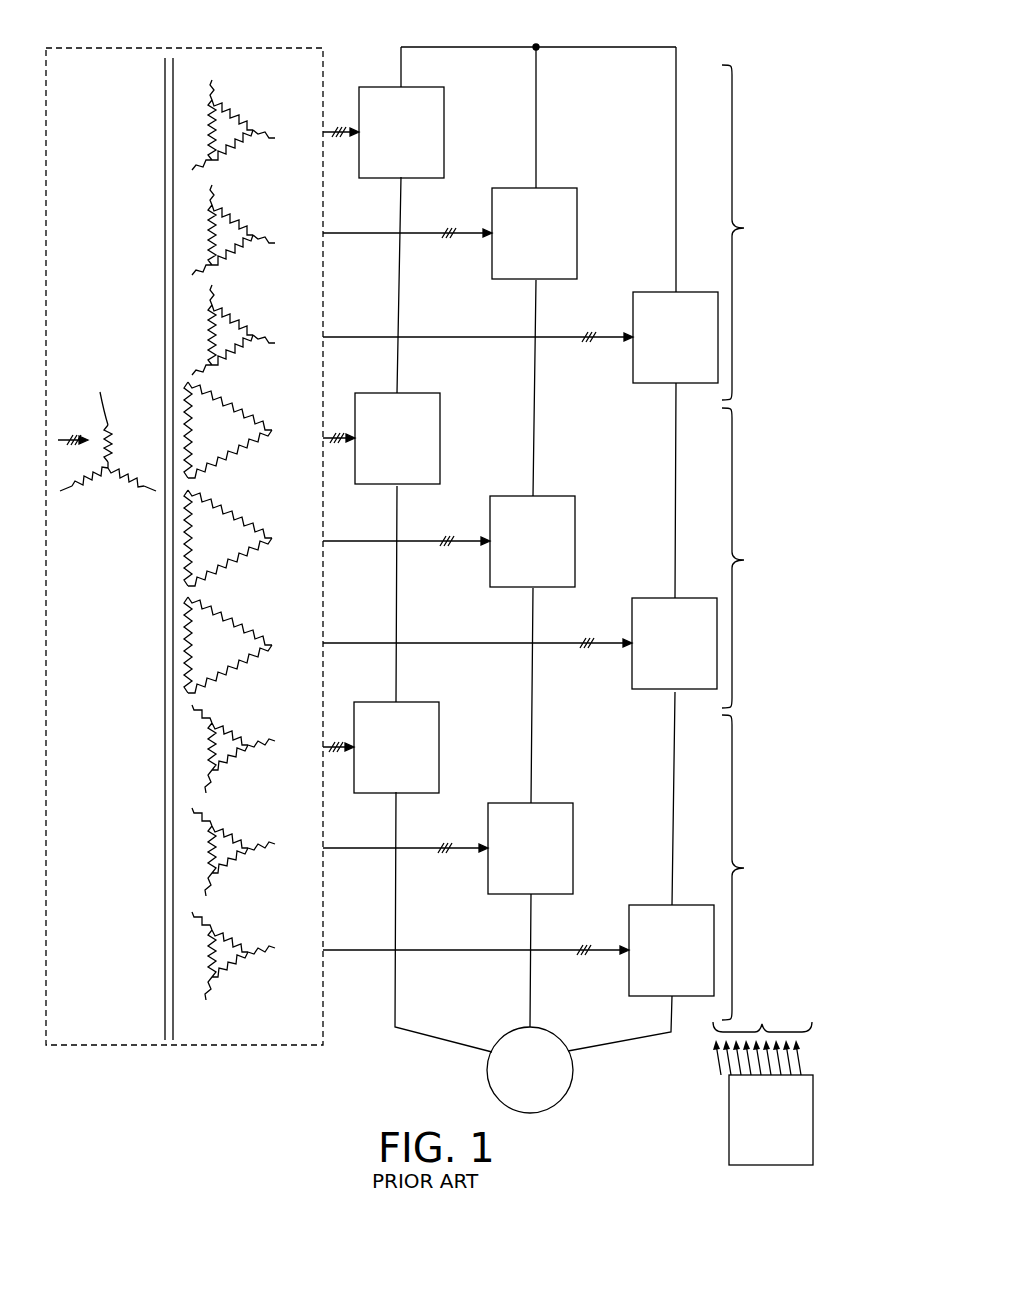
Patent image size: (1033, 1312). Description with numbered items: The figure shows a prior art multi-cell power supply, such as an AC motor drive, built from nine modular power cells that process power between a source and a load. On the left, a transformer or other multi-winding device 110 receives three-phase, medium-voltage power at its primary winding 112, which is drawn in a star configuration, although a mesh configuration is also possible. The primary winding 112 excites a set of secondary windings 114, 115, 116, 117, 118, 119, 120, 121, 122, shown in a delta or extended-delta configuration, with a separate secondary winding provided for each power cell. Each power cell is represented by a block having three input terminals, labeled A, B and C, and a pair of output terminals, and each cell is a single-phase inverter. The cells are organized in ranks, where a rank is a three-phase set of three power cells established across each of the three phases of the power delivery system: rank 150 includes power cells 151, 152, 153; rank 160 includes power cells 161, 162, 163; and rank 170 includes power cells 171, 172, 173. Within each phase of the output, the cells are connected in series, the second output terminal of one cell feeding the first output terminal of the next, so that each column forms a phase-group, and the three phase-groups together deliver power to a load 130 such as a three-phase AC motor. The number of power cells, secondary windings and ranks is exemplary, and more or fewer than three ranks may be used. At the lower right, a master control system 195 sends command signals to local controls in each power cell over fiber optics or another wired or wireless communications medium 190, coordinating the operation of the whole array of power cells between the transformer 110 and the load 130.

The transformer 110 is at (140, 47).
The primary winding 112 is at (107, 429).
The secondary winding 114 is at (238, 120).
The secondary winding 115 is at (238, 225).
The secondary winding 116 is at (238, 325).
The secondary winding 117 is at (248, 422).
The secondary winding 118 is at (248, 530).
The secondary winding 119 is at (248, 634).
The secondary winding 120 is at (240, 738).
The secondary winding 121 is at (240, 841).
The secondary winding 122 is at (240, 945).
The load 130 is at (508, 1034).
The rank 150 is at (755, 232).
The power cell 151 is at (444, 128).
The power cell 152 is at (577, 229).
The power cell 153 is at (633, 359).
The rank 160 is at (755, 558).
The power cell 161 is at (440, 434).
The power cell 162 is at (575, 537).
The power cell 163 is at (632, 665).
The rank 170 is at (755, 867).
The power cell 171 is at (439, 743).
The power cell 172 is at (573, 844).
The power cell 173 is at (629, 972).
The communications medium 190 is at (762, 1036).
The master control system 195 is at (729, 1120).